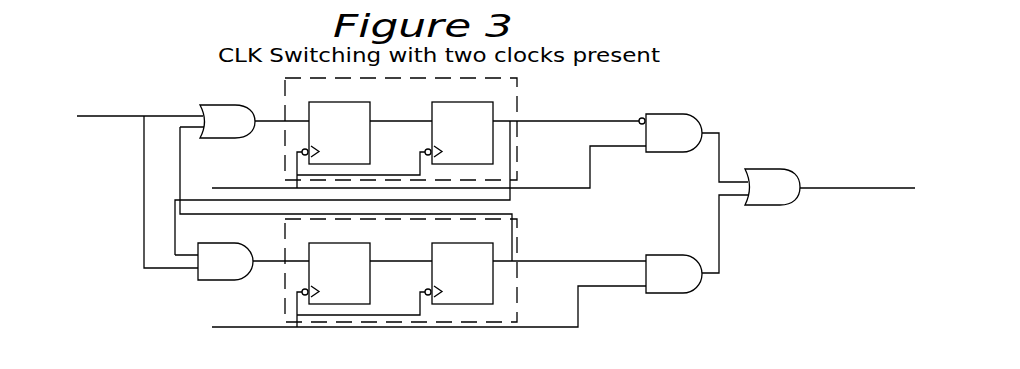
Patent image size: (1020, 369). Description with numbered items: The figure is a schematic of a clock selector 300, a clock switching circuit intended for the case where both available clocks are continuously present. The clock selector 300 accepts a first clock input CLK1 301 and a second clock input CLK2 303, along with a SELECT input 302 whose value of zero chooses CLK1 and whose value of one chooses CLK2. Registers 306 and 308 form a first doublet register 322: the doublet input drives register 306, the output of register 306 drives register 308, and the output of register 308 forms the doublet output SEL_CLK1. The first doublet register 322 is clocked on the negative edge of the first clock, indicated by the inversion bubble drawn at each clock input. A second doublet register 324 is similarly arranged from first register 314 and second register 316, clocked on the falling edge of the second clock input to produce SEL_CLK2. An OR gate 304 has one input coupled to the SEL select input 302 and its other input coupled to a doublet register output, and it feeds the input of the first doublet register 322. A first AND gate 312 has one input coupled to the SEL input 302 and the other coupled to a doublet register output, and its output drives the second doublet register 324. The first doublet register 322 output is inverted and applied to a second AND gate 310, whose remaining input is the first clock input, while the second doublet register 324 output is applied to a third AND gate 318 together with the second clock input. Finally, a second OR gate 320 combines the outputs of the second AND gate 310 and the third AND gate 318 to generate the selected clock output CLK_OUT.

The clock selector 300 is at (180, 71).
The first clock input CLK1 301 is at (278, 182).
The SELECT input 302 is at (115, 170).
The second clock input CLK2 303 is at (267, 332).
The OR gate 304 is at (346, 169).
The first register 306 is at (361, 132).
The second register 308 is at (506, 120).
The second AND gate 310 is at (693, 136).
The first AND gate 312 is at (342, 213).
The first register 314 is at (361, 272).
The second register 316 is at (508, 260).
The third AND gate 318 is at (697, 244).
The second OR gate 320 is at (830, 175).
The first doublet register 322 is at (527, 90).
The second doublet register 324 is at (520, 228).